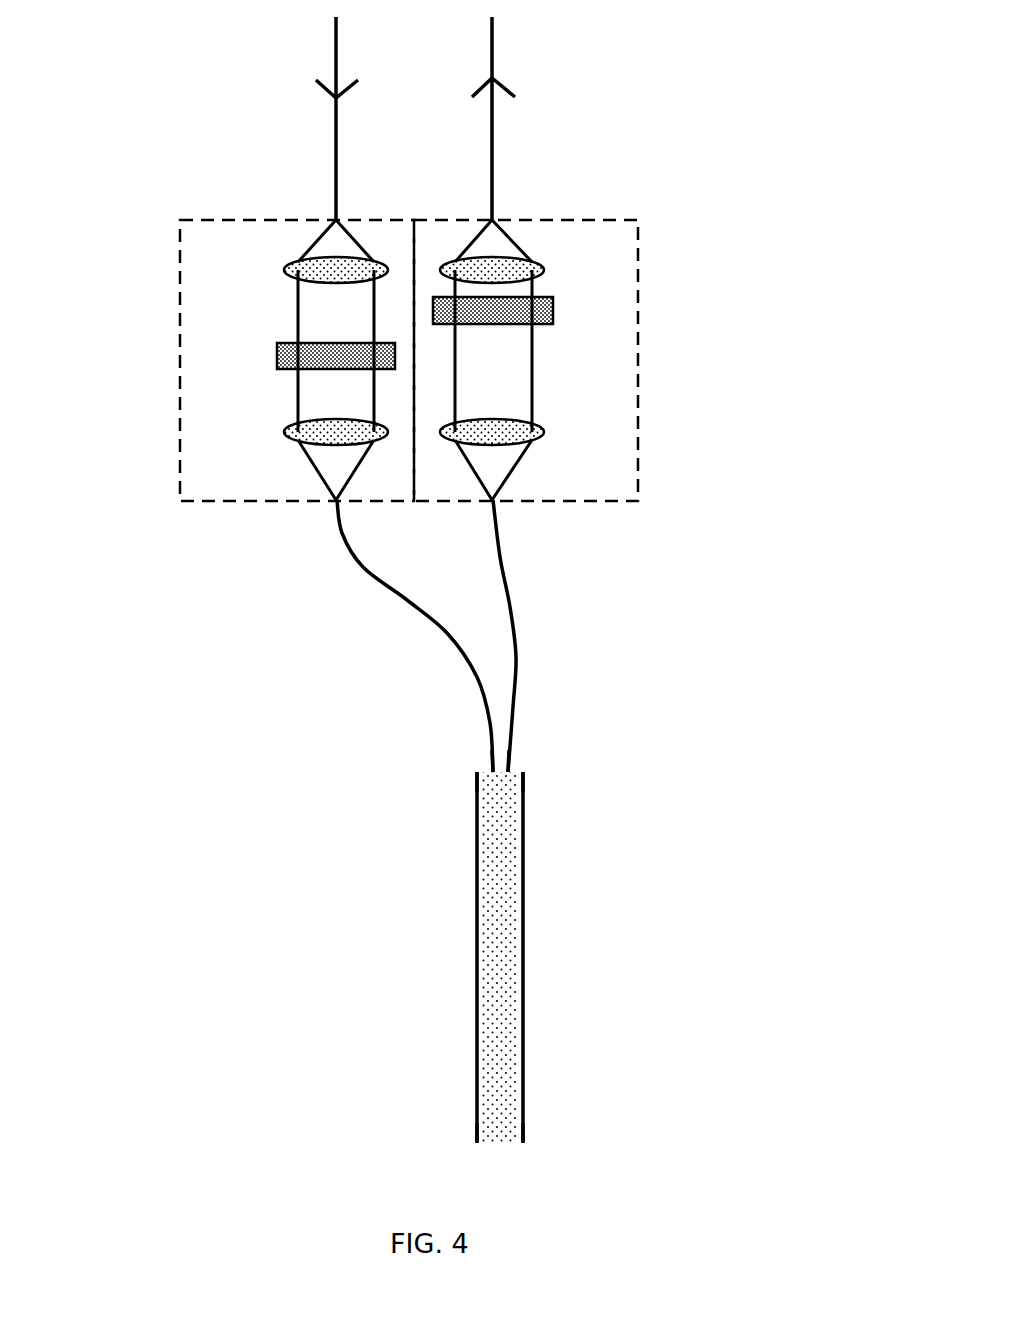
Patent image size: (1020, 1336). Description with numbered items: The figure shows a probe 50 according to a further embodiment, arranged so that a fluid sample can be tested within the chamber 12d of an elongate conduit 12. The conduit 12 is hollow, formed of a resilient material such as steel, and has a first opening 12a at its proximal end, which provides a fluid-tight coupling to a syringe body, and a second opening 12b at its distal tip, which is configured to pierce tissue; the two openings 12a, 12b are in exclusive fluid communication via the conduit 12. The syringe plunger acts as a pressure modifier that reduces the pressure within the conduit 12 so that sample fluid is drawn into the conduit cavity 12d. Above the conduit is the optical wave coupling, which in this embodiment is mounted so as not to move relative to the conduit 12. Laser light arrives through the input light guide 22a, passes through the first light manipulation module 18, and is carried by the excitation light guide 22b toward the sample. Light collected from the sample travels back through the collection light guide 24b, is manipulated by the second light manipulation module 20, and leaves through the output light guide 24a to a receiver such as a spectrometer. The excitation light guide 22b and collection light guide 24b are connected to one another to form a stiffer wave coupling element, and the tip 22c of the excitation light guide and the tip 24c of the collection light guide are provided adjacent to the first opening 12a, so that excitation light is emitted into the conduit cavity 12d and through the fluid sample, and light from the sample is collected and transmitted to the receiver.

The probe 50 is at (435, 296).
The first light manipulation module 18 is at (180, 370).
The second light manipulation module 20 is at (639, 317).
The input light guide 22a is at (336, 150).
The output light guide 24a is at (492, 142).
The excitation light guide 22b is at (402, 597).
The collection light guide 24b is at (505, 578).
The tip of the excitation light guide 22c is at (490, 783).
The tip of the collection light guide 24c is at (510, 783).
The elongate conduit 12 is at (506, 964).
The first opening 12a is at (490, 772).
The second opening 12b is at (500, 1143).
The conduit chamber 12d is at (490, 983).